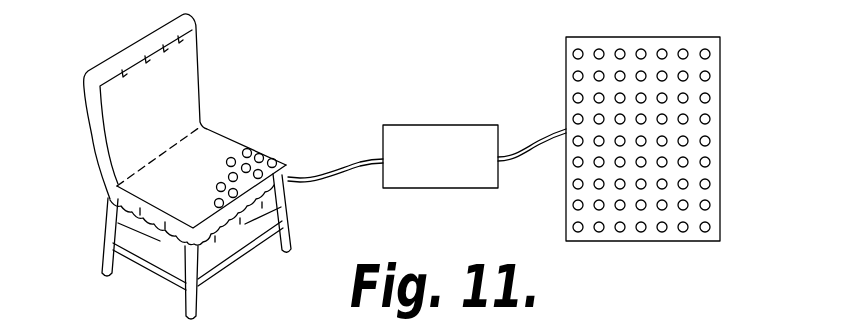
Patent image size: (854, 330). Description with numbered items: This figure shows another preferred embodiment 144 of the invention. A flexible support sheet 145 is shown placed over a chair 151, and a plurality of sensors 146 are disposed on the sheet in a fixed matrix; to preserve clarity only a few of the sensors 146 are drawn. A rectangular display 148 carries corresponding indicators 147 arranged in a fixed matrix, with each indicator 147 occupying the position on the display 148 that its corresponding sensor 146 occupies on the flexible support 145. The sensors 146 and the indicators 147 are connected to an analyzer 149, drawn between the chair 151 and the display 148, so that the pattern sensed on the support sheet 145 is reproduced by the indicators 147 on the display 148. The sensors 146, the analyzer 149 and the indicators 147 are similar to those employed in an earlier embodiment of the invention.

The preferred embodiment 144 is at (453, 37).
The flexible support sheet 145 is at (233, 218).
The sensors 146 is at (273, 158).
The indicators 147 is at (709, 160).
The rectangular display 148 is at (720, 68).
The analyzer 149 is at (406, 125).
The chair 151 is at (102, 227).